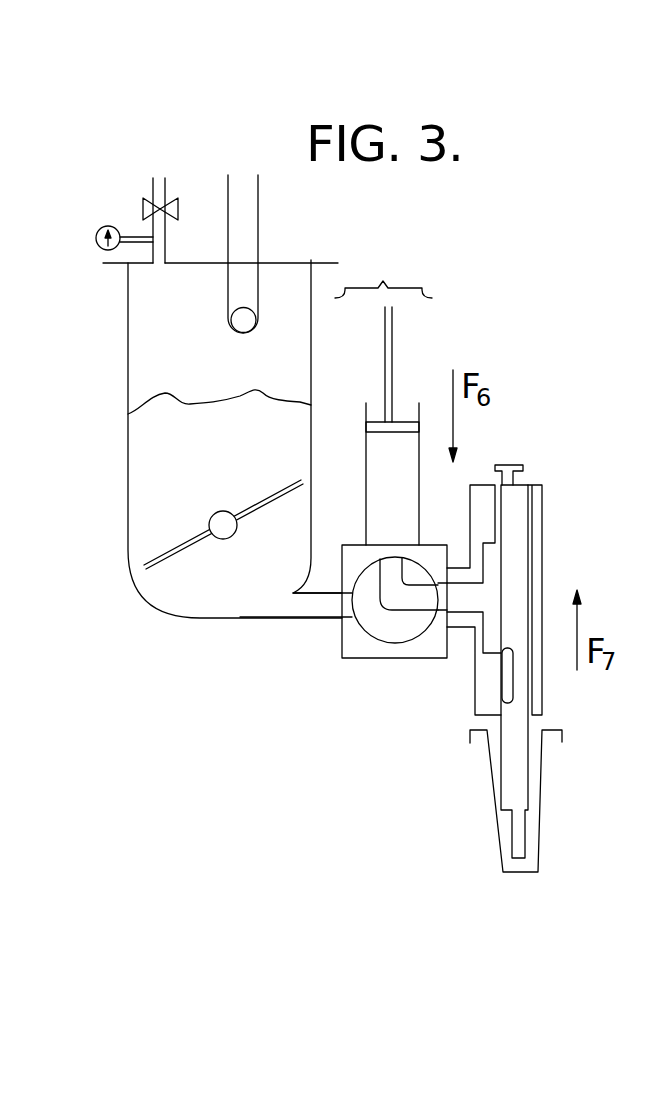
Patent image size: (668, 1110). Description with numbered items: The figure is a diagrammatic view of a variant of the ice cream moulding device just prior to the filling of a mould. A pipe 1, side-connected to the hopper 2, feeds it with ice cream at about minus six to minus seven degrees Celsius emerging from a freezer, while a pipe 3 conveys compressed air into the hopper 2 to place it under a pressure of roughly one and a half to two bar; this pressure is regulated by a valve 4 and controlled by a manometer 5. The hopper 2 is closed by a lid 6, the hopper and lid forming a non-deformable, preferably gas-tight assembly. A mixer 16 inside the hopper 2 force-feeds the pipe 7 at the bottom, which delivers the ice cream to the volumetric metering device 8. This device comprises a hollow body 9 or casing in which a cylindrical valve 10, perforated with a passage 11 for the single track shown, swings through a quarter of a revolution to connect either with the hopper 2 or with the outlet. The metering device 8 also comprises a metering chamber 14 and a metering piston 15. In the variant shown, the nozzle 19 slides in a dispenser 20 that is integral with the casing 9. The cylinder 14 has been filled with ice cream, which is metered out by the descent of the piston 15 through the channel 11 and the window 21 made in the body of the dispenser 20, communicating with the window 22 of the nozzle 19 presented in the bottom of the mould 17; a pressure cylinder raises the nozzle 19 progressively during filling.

The pipe 1 is at (243, 286).
The hopper 2 is at (127, 348).
The pipe 3 is at (162, 182).
The valve 4 is at (141, 205).
The manometer 5 is at (100, 232).
The lid 6 is at (123, 259).
The pipe 7 is at (309, 604).
The volumetric metering device 8 is at (383, 268).
The hollow body 9 is at (360, 648).
The cylindrical valve 10 is at (400, 630).
The passage 11 is at (397, 594).
The metering chamber 14 is at (387, 457).
The metering piston 15 is at (393, 363).
The mixer 16 is at (158, 553).
The mould 17 is at (542, 785).
The nozzle 19 is at (507, 550).
The dispenser 20 is at (481, 497).
The window 21 is at (493, 620).
The window 22 is at (503, 687).